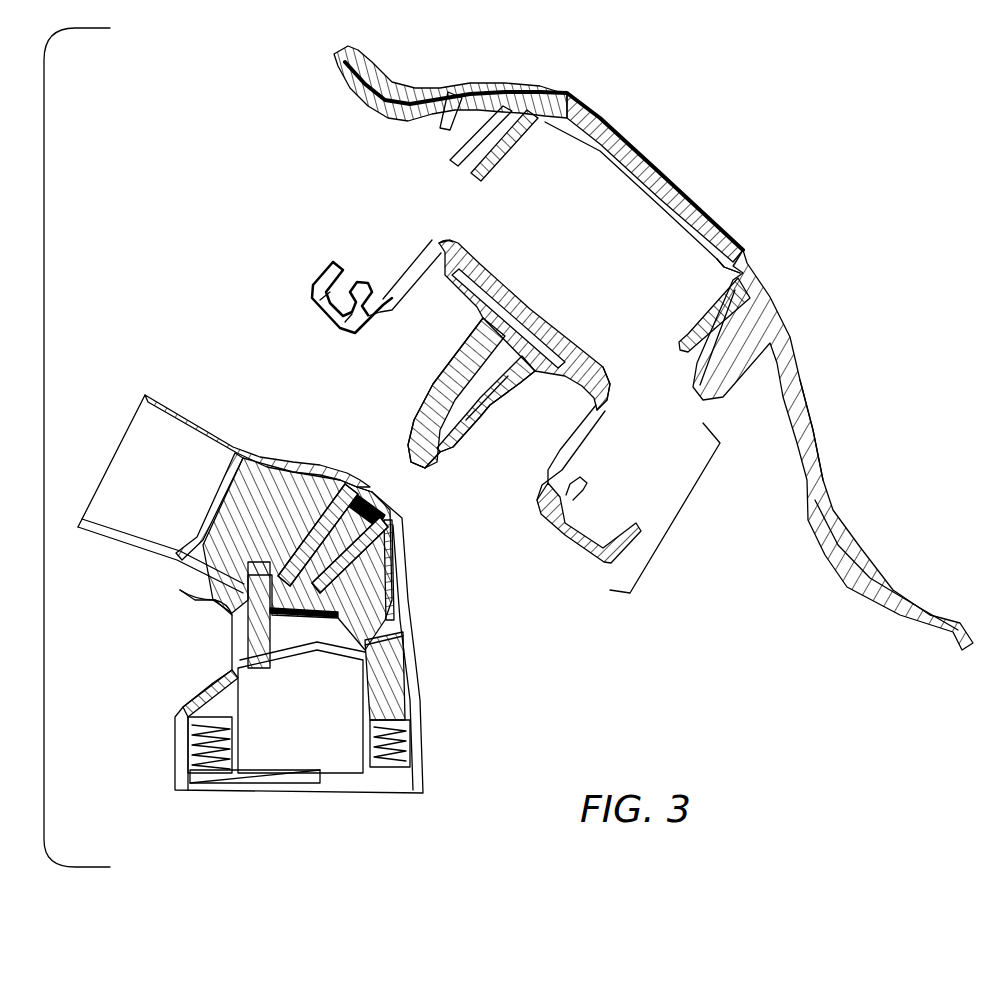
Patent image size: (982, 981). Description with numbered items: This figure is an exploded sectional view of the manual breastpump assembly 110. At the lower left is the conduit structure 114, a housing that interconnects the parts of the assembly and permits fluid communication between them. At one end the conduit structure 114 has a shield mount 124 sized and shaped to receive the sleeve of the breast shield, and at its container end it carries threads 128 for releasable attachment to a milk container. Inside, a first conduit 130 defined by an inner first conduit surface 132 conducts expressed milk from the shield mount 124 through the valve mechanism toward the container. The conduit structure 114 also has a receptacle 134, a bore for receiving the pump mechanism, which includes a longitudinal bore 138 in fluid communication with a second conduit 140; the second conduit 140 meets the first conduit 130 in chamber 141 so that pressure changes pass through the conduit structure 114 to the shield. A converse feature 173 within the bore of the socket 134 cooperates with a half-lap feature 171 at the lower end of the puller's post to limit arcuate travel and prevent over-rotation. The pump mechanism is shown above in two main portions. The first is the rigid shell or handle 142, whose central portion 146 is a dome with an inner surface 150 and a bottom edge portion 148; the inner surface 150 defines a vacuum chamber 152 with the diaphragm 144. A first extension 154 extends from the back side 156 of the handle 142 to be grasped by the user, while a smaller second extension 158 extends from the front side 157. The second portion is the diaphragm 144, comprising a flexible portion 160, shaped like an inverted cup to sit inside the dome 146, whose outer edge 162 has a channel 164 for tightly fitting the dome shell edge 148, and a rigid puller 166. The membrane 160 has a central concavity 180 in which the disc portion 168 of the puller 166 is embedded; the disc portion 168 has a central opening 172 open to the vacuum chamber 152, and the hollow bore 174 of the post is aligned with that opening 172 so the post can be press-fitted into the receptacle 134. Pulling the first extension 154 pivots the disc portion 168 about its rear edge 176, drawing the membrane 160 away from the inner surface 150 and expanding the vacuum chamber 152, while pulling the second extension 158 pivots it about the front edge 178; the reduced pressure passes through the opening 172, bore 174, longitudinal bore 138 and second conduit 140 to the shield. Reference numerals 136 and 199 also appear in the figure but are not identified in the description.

The breastpump assembly 110 is at (433, 386).
The conduit structure 114 is at (411, 611).
The shield mount 124 is at (212, 383).
The threads 128 is at (412, 749).
The first conduit 130 is at (177, 588).
The inner first conduit surface 132 is at (213, 598).
The receptacle 134 is at (397, 507).
The corner 136 is at (370, 490).
The longitudinal bore 138 is at (345, 562).
The second conduit 140 is at (300, 600).
The chamber 141 is at (314, 738).
The handle 142 is at (787, 313).
The diaphragm 144 is at (387, 226).
The central portion 146 is at (687, 192).
The bottom edge portion 148 is at (478, 172).
The inner surface 150 is at (636, 204).
The vacuum chamber 152 is at (633, 273).
The first extension 154 is at (823, 456).
The back side 156 is at (823, 437).
The front side 157 is at (505, 84).
The second extension 158 is at (432, 86).
The flexible portion 160 is at (660, 540).
The outer edge 162 is at (575, 487).
The channel 164 is at (576, 468).
The puller 166 is at (590, 365).
The disc portion 168 is at (503, 285).
The half-lap feature 171 is at (400, 444).
The central opening 172 is at (530, 318).
The converse feature 173 is at (400, 465).
The hollow bore 174 is at (452, 438).
The rear edge 176 is at (611, 391).
The front edge 178 is at (445, 240).
The central concavity 180 is at (457, 290).
The leg 199 is at (586, 445).